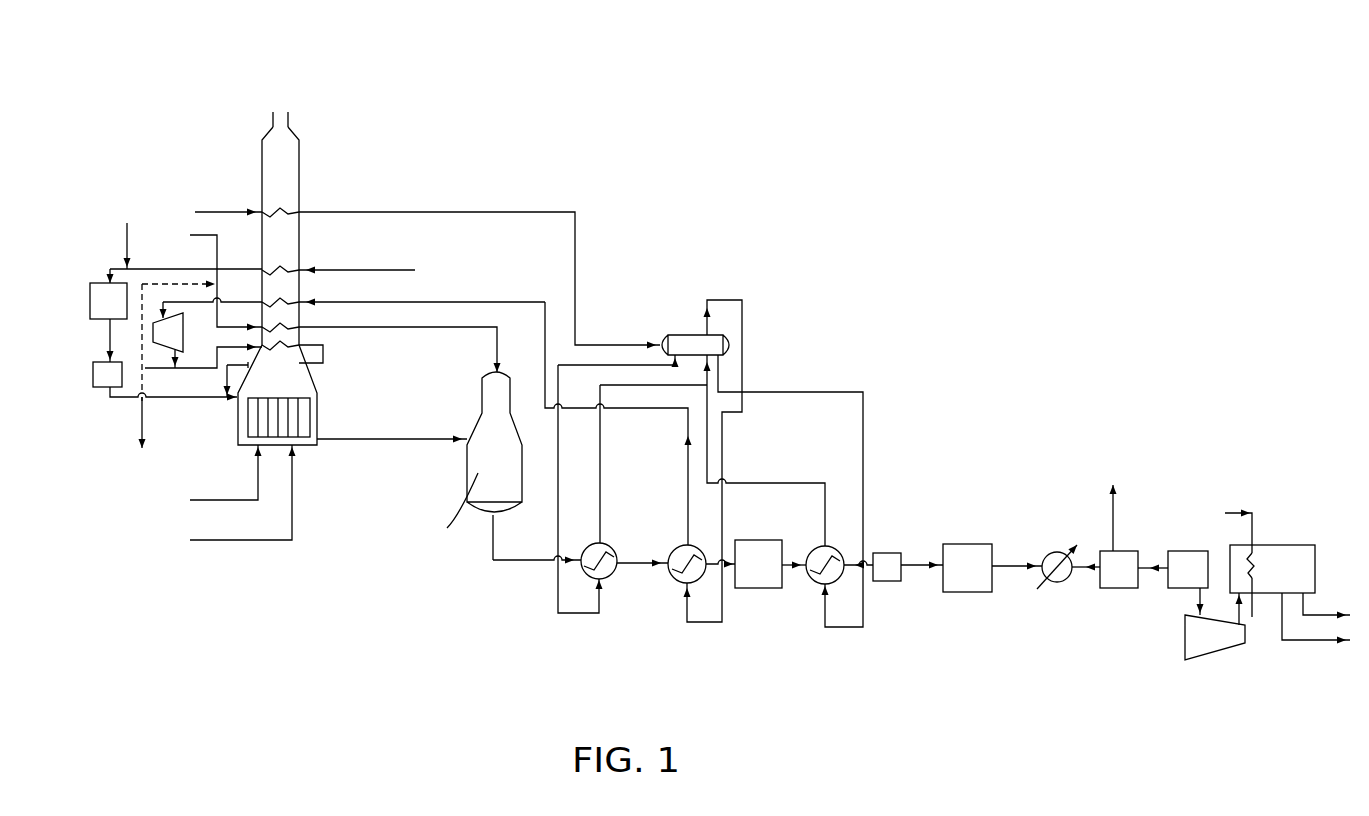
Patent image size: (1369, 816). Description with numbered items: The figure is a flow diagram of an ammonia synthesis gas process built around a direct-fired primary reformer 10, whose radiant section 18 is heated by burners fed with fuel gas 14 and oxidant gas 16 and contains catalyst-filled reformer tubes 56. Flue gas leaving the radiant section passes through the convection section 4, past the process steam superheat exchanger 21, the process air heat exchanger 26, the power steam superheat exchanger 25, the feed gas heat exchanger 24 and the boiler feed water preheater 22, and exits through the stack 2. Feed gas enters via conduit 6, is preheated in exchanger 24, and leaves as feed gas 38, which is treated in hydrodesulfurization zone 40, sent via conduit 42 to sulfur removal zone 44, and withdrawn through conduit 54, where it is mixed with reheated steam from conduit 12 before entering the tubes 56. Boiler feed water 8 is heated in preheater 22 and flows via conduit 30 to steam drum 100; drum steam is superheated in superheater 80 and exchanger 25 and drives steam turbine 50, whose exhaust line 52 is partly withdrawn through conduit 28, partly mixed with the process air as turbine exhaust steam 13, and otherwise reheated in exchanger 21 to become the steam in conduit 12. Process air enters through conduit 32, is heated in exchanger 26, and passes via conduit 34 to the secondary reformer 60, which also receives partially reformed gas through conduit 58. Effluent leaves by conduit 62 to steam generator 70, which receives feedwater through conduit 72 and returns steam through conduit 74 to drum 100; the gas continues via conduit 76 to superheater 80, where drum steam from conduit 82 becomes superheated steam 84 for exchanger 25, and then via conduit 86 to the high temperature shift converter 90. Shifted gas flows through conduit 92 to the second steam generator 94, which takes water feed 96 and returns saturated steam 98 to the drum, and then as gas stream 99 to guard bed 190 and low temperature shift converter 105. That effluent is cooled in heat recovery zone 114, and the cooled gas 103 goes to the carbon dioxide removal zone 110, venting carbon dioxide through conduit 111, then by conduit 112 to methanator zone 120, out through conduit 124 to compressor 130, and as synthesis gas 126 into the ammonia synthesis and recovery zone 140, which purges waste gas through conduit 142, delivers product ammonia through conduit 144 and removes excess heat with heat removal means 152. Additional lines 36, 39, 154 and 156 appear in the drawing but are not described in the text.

The stack 2 is at (285, 107).
The convection section 4 is at (302, 247).
The feed gas conduit 6 is at (368, 270).
The boiler feed water 8 is at (223, 211).
The primary reforming furnace stage 10 is at (318, 190).
The turbine exhaust steam conduit 12 is at (323, 357).
The turbine exhaust steam 13 is at (142, 325).
The fuel gas 14 is at (228, 500).
The oxidant gas 16 is at (229, 540).
The primary reforming radiant section 18 is at (313, 382).
The process steam superheat exchanger 21 is at (288, 357).
The boiler feed water preheater 22 is at (283, 209).
The feed gas heat exchanger 24 is at (282, 268).
The power steam superheat exchanger 25 is at (290, 295).
The process air heat exchanger 26 is at (290, 325).
The conduit 28 is at (140, 423).
The conduit 30 is at (440, 213).
The conduit 32 is at (217, 250).
The conduit 34 is at (418, 328).
The compressor suction line 36 is at (200, 302).
The feed gas conduit 38 is at (180, 269).
The inlet line 39 is at (128, 224).
The hydrodesulfurization zone 40 is at (119, 309).
The conduit 42 is at (108, 330).
The sulfur removal zone 44 is at (92, 377).
The steam turbine 50 is at (168, 332).
The turbine exhaust line 52 is at (182, 356).
The conduit 54 is at (213, 398).
The reformer tubes 56 is at (308, 420).
The conduit 58 is at (407, 439).
The secondary reformer 60 is at (522, 488).
The conduit 62 is at (515, 562).
The steam generator 70 is at (610, 546).
The conduit 72 is at (558, 507).
The conduit 74 is at (602, 508).
The conduit 76 is at (635, 564).
The steam superheater 80 is at (676, 547).
The conduit 82 is at (742, 357).
The superheated steam conduit 84 is at (440, 302).
The conduit 86 is at (712, 552).
The high temperature shift converter 90 is at (756, 540).
The conduit 92 is at (790, 567).
The second steam generator 94 is at (812, 547).
The water feed 96 is at (825, 606).
The saturated steam 98 is at (767, 483).
The gas stream 99 is at (853, 561).
The steam drum 100 is at (688, 335).
The cooled low temperature shift converter effluent gas 103 is at (1078, 567).
The low temperature shift converter 105 is at (965, 544).
The CO2-removal zone 110 is at (1118, 588).
The conduit 111 is at (1115, 513).
The conduit 112 is at (1148, 563).
The heat recovery zone 114 is at (1052, 553).
The methanator zone 120 is at (1182, 551).
The conduit 124 is at (1195, 603).
The synthesis gas conduit 126 is at (1239, 608).
The compressor 130 is at (1185, 642).
The ammonia synthesis and recovery zone 140 is at (1315, 549).
The conduit 142 is at (1320, 615).
The conduit 144 is at (1310, 640).
The heat removal means 152 is at (1257, 568).
The line 154 is at (1262, 617).
The line 156 is at (1247, 510).
The guard bed 190 is at (883, 553).